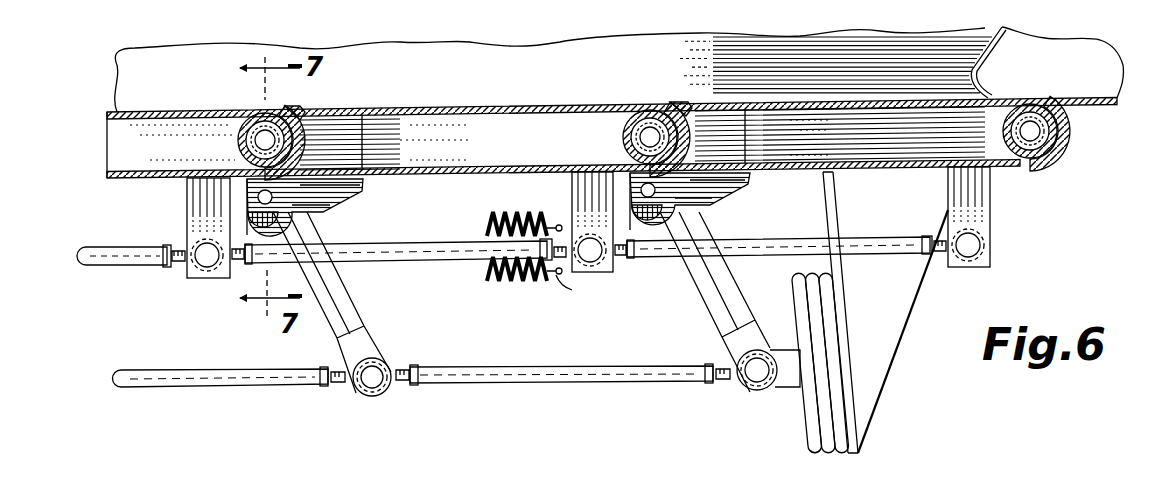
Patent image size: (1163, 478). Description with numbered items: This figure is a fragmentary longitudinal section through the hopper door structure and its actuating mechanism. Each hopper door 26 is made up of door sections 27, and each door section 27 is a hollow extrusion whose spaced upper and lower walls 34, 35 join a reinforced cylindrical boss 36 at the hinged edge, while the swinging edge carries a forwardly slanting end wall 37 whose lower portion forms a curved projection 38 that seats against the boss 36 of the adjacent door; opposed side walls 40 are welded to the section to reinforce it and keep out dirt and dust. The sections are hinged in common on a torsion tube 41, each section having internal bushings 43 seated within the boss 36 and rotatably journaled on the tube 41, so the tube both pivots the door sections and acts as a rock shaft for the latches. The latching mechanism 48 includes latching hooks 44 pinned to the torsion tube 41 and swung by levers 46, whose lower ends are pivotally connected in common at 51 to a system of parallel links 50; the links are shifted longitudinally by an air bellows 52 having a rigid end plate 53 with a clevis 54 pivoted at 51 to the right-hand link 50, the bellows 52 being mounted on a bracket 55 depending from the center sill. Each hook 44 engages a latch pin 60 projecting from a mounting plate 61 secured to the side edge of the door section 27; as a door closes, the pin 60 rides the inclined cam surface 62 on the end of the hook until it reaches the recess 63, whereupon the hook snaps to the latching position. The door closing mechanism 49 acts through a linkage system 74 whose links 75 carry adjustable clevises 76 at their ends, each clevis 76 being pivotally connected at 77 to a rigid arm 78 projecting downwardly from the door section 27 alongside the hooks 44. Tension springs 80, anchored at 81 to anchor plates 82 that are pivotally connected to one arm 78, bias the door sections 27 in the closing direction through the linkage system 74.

The hopper door 26 is at (503, 121).
The door section 27 is at (102, 151).
The upper wall 34 is at (120, 110).
The lower wall 35 is at (118, 180).
The cylindrical boss 36 is at (673, 106).
The end wall 37 is at (323, 111).
The curved projection 38 is at (313, 163).
The side wall 40 is at (494, 148).
The torsion tube 41 is at (276, 118).
The internal bushing 43 is at (254, 115).
The latching hook 44 is at (325, 214).
The lever 46 is at (366, 325).
The latching mechanism 48 is at (402, 400).
The door closing mechanism 49 is at (604, 290).
The link 50 is at (290, 390).
The pivot 51 is at (374, 389).
The air bellows 52 is at (851, 412).
The rigid end plate 53 is at (812, 442).
The clevis 54 is at (790, 351).
The bracket 55 is at (896, 351).
The latch pin 60 is at (353, 189).
The mounting plate 61 is at (388, 186).
The inclined cam surface 62 is at (680, 224).
The recess 63 is at (243, 221).
The linkage system 74 is at (94, 269).
The link 75 is at (429, 265).
The adjustable clevis 76 is at (176, 268).
The pivot 77 is at (210, 263).
The rigid arm 78 is at (186, 233).
The tension spring 80 is at (490, 283).
The anchor 81 is at (554, 282).
The anchor plate 82 is at (568, 291).